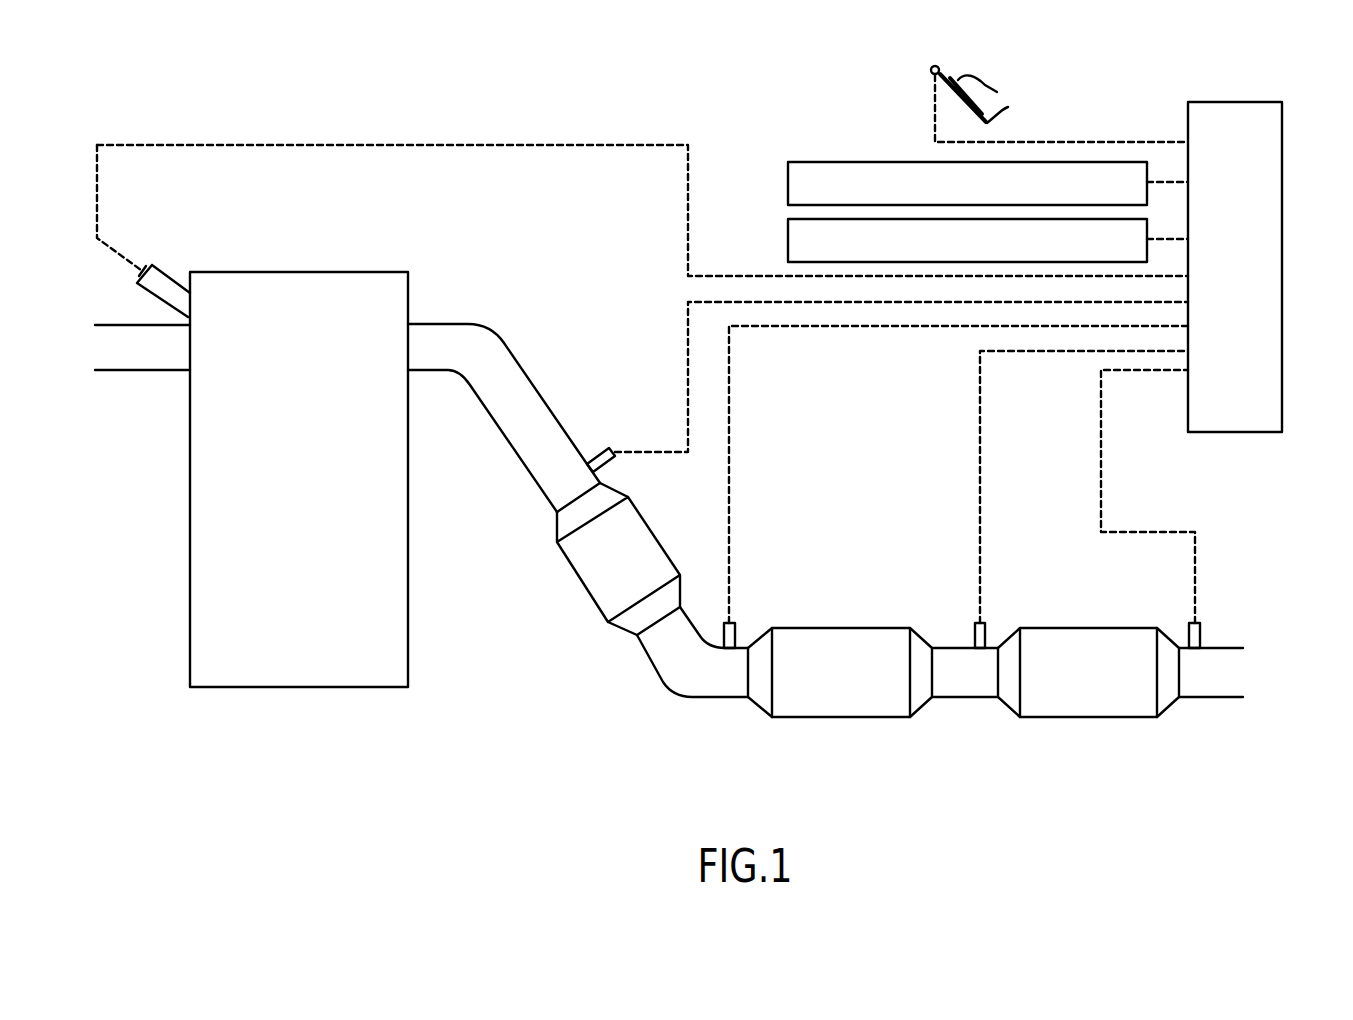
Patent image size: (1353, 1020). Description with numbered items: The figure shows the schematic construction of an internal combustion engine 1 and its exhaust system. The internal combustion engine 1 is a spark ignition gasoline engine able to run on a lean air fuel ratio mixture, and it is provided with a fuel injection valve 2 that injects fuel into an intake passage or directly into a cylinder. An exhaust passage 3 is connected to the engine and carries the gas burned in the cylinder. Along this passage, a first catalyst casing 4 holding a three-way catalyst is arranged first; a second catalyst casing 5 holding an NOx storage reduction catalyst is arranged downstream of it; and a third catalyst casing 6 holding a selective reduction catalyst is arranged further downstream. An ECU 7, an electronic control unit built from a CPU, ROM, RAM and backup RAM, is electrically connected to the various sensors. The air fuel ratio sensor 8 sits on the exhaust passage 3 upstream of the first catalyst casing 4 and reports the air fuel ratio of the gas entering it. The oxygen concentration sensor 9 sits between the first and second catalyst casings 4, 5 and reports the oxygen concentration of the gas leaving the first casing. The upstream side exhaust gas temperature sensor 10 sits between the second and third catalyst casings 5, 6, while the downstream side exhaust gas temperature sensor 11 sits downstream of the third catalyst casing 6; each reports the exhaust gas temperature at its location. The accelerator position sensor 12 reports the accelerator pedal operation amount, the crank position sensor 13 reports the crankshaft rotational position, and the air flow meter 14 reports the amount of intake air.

The internal combustion engine 1 is at (190, 587).
The fuel injection valve 2 is at (168, 275).
The exhaust passage 3 is at (488, 328).
The first catalyst casing 4 is at (583, 585).
The second catalyst casing 5 is at (825, 713).
The third catalyst casing 6 is at (1093, 713).
The ECU 7 is at (1284, 192).
The air fuel ratio sensor 8 is at (614, 462).
The oxygen concentration sensor 9 is at (735, 633).
The upstream side exhaust gas temperature sensor 10 is at (985, 630).
The downstream side exhaust gas temperature sensor 11 is at (1200, 633).
The accelerator position sensor 12 is at (935, 70).
The crank position sensor 13 is at (788, 190).
The air flow meter 14 is at (788, 247).